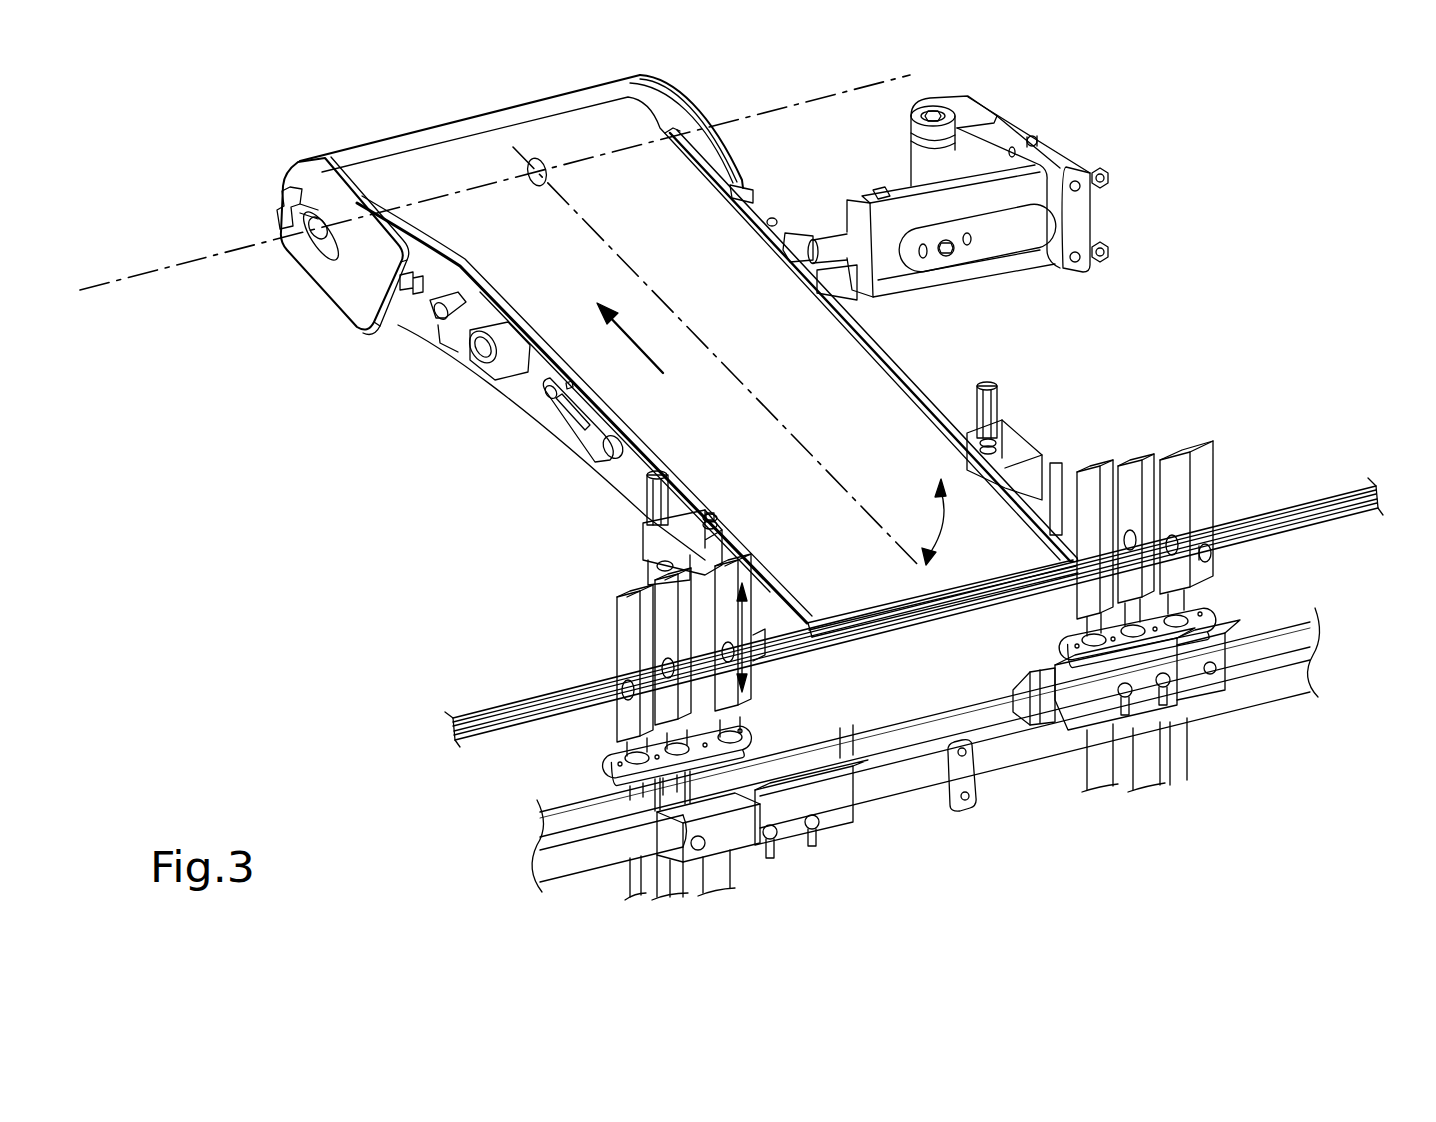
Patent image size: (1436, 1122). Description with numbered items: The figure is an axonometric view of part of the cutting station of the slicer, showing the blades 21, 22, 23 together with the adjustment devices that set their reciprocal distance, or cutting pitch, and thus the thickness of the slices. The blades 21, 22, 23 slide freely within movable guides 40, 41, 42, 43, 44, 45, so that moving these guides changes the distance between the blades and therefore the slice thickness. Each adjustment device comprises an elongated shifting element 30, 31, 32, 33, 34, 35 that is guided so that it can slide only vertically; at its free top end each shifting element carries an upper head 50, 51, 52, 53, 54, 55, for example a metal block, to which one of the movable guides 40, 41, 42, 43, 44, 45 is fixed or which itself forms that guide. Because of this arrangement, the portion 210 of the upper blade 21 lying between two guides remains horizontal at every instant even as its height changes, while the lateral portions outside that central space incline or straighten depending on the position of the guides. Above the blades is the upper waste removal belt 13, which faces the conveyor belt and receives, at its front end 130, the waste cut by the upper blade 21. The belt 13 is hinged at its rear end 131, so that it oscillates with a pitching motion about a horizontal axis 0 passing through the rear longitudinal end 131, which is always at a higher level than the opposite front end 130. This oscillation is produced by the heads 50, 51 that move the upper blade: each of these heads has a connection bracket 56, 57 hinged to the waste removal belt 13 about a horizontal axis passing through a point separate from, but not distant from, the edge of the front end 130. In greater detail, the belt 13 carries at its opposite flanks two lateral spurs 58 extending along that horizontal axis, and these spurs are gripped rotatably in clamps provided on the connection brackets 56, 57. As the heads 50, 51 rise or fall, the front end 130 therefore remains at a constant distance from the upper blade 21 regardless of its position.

The horizontal axis 0 is at (495, 182).
The upper waste removal belt 13 is at (382, 402).
The rear end of the waste removal belt 131 is at (252, 164).
The front end of the waste removal belt 130 is at (1000, 566).
The portion of the blade 210 is at (887, 600).
The upper blade 21 is at (892, 602).
The blade 22 is at (533, 703).
The blade 23 is at (483, 747).
The elongated shifting element 30 is at (925, 782).
The elongated shifting element 31 is at (1155, 746).
The elongated shifting element 32 is at (680, 883).
The elongated shifting element 33 is at (1137, 767).
The elongated shifting element 34 is at (637, 880).
The elongated shifting element 35 is at (1177, 752).
The movable guide 40 is at (773, 637).
The movable guide 41 is at (1132, 533).
The movable guide 42 is at (690, 647).
The movable guide 43 is at (1171, 537).
The movable guide 44 is at (667, 663).
The movable guide 45 is at (1218, 553).
The upper head 50 is at (752, 683).
The upper head 51 is at (1090, 492).
The upper head 52 is at (657, 583).
The upper head 53 is at (1149, 475).
The upper head 54 is at (630, 723).
The upper head 55 is at (1232, 498).
The connection bracket 56 is at (594, 508).
The connection bracket 57 is at (1016, 422).
The lateral spur 58 is at (713, 480).